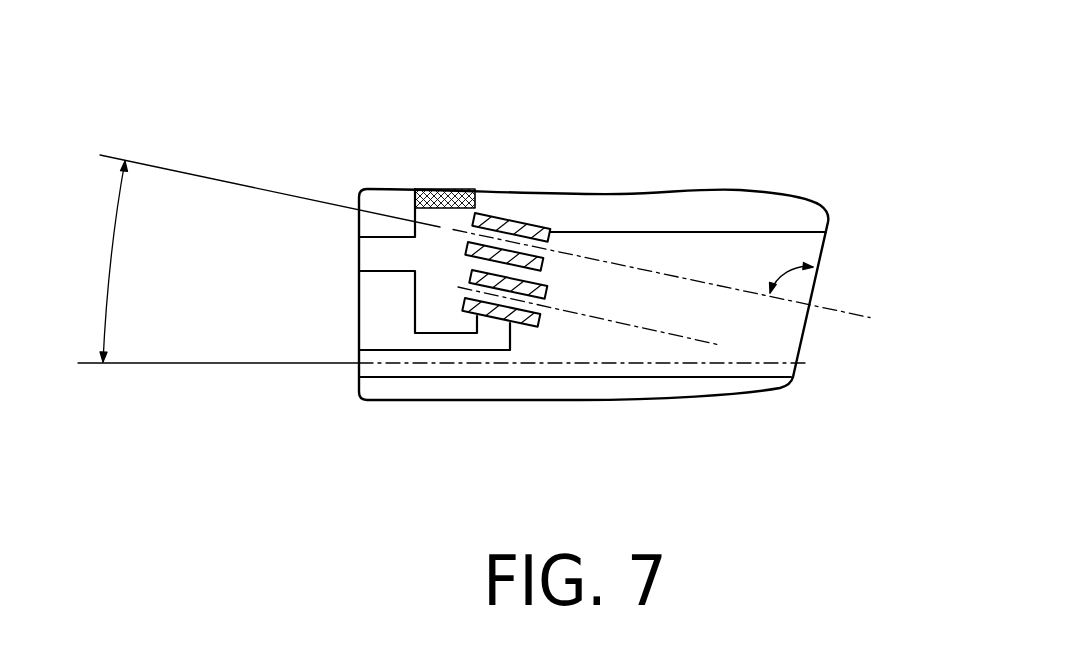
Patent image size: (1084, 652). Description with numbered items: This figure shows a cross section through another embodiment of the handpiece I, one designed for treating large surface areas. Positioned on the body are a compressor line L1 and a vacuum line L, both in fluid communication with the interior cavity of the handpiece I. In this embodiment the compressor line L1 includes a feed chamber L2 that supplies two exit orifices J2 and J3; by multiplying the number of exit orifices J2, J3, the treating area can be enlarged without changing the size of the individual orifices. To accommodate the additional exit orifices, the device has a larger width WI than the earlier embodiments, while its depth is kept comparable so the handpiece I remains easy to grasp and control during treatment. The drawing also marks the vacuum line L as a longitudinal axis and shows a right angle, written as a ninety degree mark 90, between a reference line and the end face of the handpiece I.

The handpiece I is at (668, 106).
The compressor line L1 is at (358, 255).
The feed chamber L2 is at (433, 283).
The vacuum line L is at (358, 367).
The crystal injection orifice J2 is at (557, 246).
The vacuum nozzle orifice J3 is at (537, 306).
The width WI is at (89, 261).
The right angle between axis and end face 90 is at (789, 271).